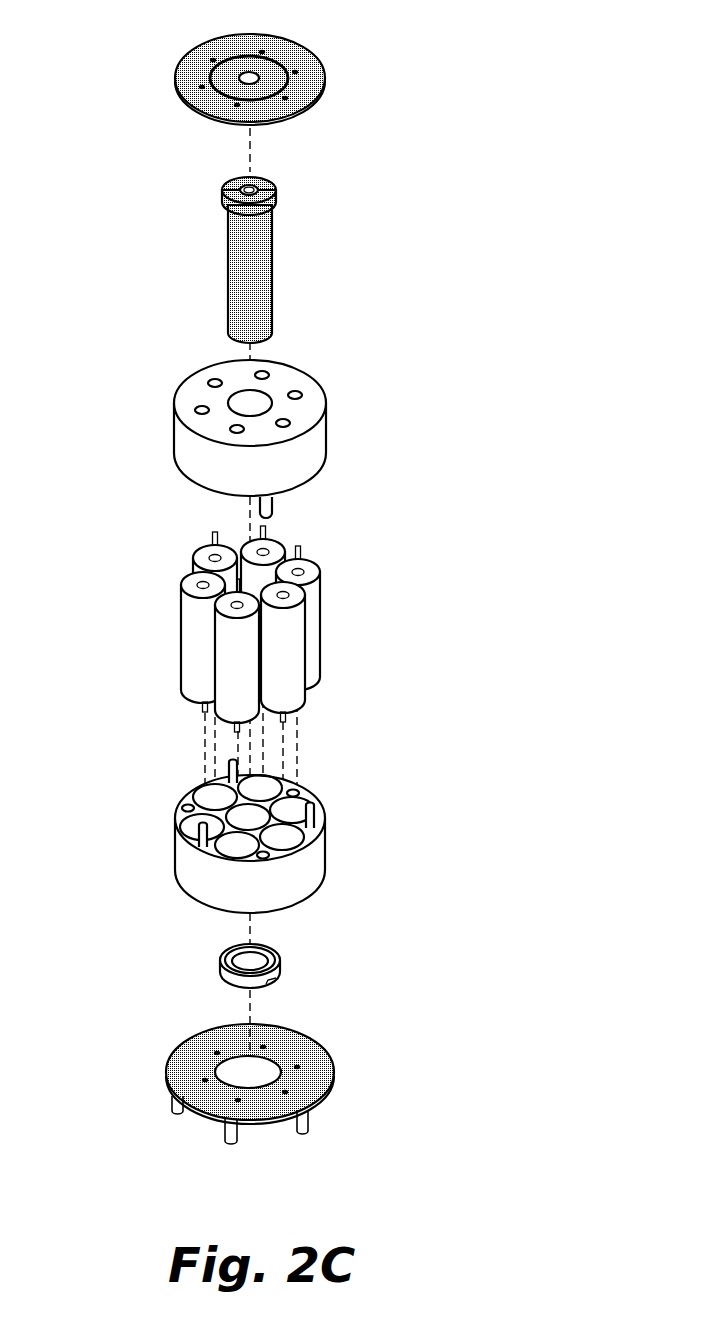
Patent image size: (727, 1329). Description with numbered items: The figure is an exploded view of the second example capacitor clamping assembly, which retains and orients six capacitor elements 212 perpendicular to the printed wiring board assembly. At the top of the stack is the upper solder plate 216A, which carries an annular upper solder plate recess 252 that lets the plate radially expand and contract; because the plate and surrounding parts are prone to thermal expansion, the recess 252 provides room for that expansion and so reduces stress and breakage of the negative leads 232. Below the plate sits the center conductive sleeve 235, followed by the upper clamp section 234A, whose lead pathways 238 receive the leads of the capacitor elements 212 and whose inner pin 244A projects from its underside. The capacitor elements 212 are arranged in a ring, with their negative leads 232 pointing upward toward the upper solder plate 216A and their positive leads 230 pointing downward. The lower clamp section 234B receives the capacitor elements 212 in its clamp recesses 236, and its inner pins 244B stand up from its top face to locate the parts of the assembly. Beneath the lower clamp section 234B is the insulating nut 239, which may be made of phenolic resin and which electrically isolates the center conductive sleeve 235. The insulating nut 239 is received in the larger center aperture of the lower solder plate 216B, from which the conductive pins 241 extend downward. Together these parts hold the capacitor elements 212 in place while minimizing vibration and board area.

The upper solder plate 216A is at (271, 65).
The upper solder plate recess 252 is at (243, 72).
The center conductive sleeve 235 is at (222, 188).
The upper clamp section 234A is at (242, 415).
The lead pathways 238 is at (296, 391).
The inner pin 244A is at (274, 506).
The capacitor elements 212 is at (263, 623).
The negative leads 232 is at (211, 538).
The positive leads 230 is at (200, 707).
The lower clamp section 234B is at (224, 816).
The clamp recesses 236 is at (302, 808).
The inner pins 244B is at (229, 772).
The insulating nut 239 is at (221, 966).
The lower solder plate 216B is at (312, 1105).
The conductive pins 241 is at (298, 1134).